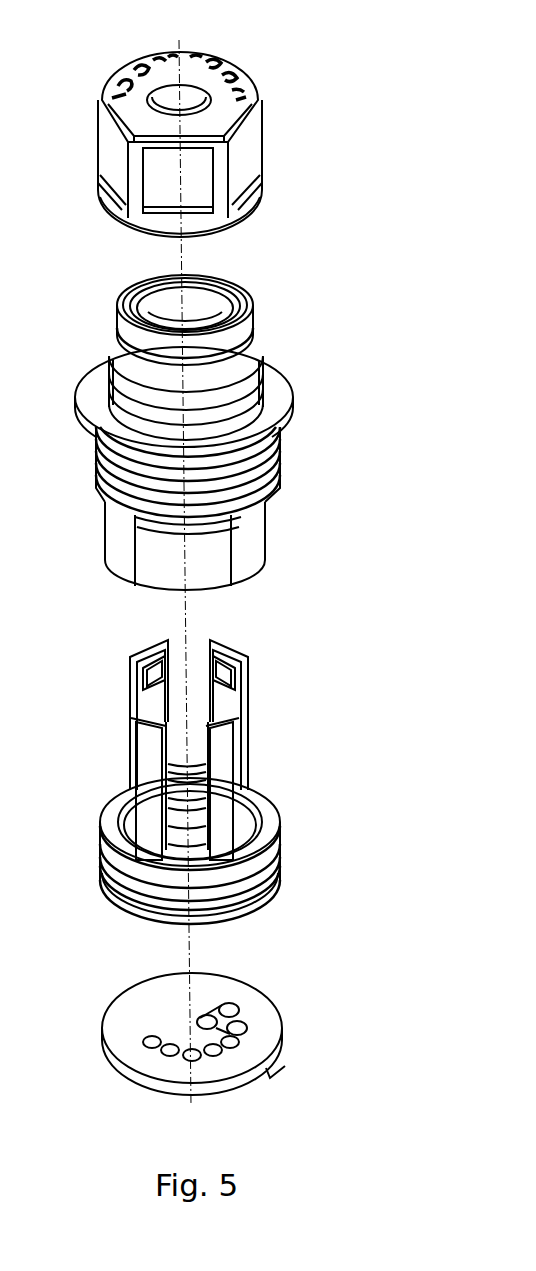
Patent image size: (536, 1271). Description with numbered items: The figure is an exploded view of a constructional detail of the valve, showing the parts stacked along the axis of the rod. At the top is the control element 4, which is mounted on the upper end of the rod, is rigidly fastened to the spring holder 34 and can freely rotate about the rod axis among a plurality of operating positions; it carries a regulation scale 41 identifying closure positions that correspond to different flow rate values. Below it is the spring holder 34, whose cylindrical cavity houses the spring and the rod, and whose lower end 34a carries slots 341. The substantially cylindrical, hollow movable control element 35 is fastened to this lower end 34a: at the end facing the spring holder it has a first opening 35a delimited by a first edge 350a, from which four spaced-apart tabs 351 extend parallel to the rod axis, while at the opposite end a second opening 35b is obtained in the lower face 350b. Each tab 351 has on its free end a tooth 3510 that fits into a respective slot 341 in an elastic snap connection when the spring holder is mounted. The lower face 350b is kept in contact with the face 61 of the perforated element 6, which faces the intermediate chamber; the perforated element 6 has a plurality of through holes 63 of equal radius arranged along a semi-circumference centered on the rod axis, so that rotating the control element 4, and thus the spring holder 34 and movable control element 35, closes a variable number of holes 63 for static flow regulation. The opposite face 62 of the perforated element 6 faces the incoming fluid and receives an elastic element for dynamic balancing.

The control element 4 is at (64, 120).
The regulation scale 41 is at (220, 57).
The spring holder 34 is at (33, 351).
The slot 341 is at (232, 527).
The lower end 34a is at (197, 543).
The movable control element 35 is at (63, 770).
The tabs 351 is at (238, 697).
The tooth 3510 is at (213, 643).
The first edge 350a is at (250, 782).
The first opening 35a is at (241, 811).
The second opening 35b is at (123, 927).
The lower face 350b is at (233, 918).
The perforated element 6 is at (82, 1015).
The face 61 is at (250, 1017).
The face 62 is at (273, 1067).
The through holes 63 is at (143, 1038).